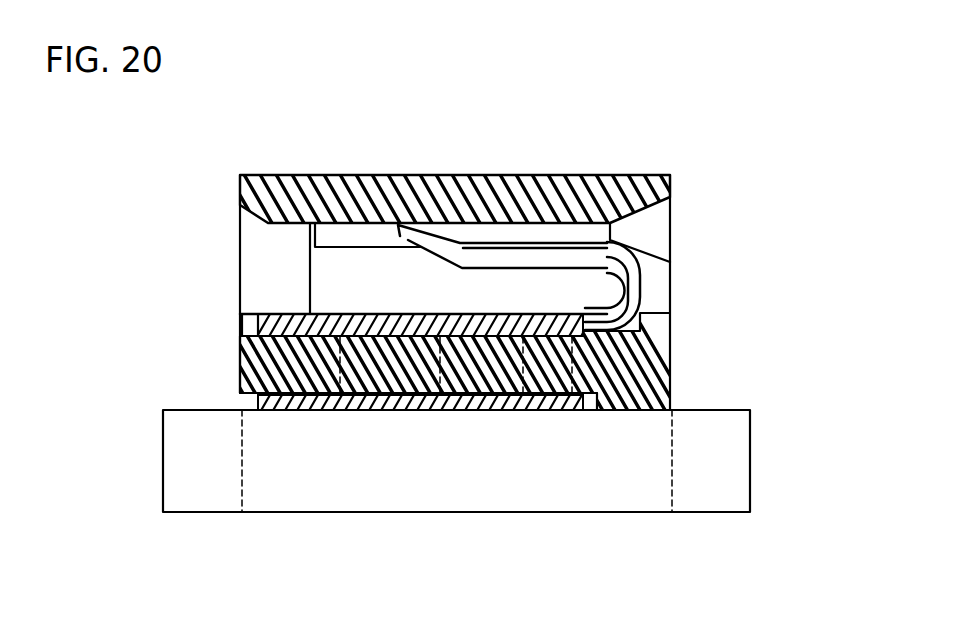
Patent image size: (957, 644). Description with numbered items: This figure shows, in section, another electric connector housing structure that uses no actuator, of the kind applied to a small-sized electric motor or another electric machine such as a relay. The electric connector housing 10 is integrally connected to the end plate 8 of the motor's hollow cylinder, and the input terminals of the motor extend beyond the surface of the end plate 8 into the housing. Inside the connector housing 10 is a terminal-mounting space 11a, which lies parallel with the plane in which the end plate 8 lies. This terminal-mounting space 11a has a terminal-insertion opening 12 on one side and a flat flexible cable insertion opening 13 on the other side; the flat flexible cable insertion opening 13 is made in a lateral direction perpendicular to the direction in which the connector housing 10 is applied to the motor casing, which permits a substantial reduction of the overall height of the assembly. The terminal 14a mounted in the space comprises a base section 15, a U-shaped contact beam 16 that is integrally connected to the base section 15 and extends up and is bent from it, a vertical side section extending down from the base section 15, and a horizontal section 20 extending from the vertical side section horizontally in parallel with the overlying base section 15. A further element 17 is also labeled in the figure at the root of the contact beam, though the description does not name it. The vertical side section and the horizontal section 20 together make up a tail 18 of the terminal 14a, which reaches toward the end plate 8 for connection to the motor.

The end plate 8 is at (725, 475).
The electric connector housing 10 is at (655, 368).
The terminal-mounting space 11a is at (423, 285).
The terminal-insertion opening 12 is at (273, 271).
The flat flexible cable insertion opening 13 is at (648, 233).
The terminal 14a is at (655, 294).
The base section 15 is at (495, 328).
The U-shaped contact beam 16 is at (535, 265).
The spring arm 17 is at (408, 233).
The tail 18 is at (568, 413).
The horizontal section 20 is at (558, 402).